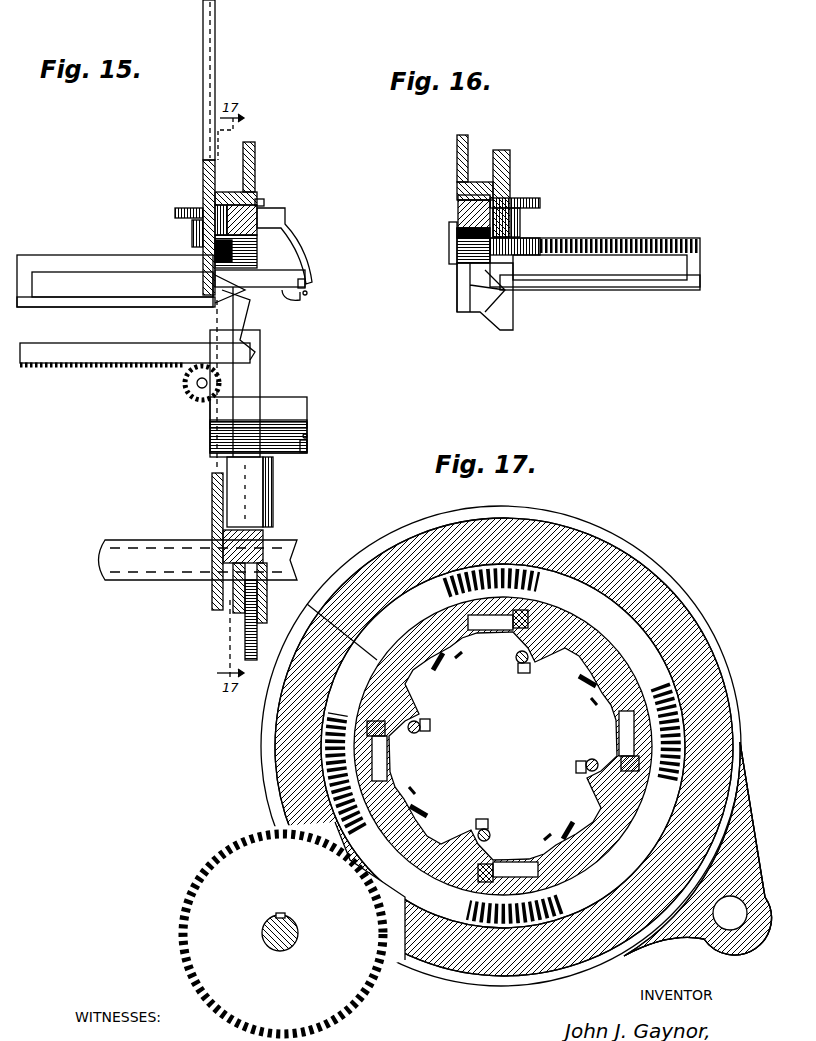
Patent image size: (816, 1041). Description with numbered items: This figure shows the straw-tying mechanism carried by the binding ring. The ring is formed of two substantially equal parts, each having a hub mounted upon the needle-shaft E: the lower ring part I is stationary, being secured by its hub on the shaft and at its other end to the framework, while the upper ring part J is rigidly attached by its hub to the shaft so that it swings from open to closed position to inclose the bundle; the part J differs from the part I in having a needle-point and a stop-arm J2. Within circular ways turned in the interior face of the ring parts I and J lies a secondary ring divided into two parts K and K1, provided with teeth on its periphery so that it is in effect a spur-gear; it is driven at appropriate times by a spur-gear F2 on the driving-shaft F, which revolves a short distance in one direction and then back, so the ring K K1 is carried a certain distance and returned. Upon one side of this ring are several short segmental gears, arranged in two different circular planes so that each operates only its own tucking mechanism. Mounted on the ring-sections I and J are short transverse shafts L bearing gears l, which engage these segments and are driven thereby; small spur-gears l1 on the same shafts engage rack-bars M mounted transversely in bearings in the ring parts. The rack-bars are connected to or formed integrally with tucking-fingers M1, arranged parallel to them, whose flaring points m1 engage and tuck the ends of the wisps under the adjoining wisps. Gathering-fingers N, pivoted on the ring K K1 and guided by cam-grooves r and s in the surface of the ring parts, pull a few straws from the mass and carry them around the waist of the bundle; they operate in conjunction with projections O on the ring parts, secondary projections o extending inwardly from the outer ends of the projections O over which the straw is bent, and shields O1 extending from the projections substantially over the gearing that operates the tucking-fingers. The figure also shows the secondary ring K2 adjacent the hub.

In FIG. 15, the ring part J is at (257, 178).
In FIG. 16, the ring part J is at (457, 168).
In FIG. 17, the ring part J is at (620, 544).
In FIG. 15, the stop-arm J2 is at (215, 70).
In FIG. 15, the cam-groove s is at (255, 155).
In FIG. 16, the cam-groove s is at (457, 150).
In FIG. 15, the cam-groove r is at (264, 203).
In FIG. 16, the cam-groove r is at (458, 197).
In FIG. 15, the secondary ring part K is at (265, 545).
In FIG. 17, the secondary ring part K is at (420, 896).
In FIG. 15, the secondary ring part K1 is at (250, 217).
In FIG. 16, the secondary ring part K1 is at (462, 210).
In FIG. 15, the gear on hub K2 is at (258, 256).
In FIG. 15, the gathering-finger N is at (290, 228).
In FIG. 15, the transverse shaft L is at (192, 228).
In FIG. 16, the transverse shaft L is at (525, 222).
In FIG. 15, the gear l is at (195, 208).
In FIG. 16, the gear l is at (527, 198).
In FIG. 15, the small spur-gear l1 is at (192, 395).
In FIG. 16, the small spur-gear l1 is at (540, 242).
In FIG. 15, the rack-bar M is at (115, 280).
In FIG. 16, the rack-bar M is at (680, 238).
In FIG. 17, the rack-bar M is at (618, 750).
In FIG. 15, the tucking-finger M1 is at (150, 305).
In FIG. 16, the tucking-finger M1 is at (600, 290).
In FIG. 17, the tucking-finger M1 is at (508, 640).
In FIG. 15, the flaring point m1 is at (245, 305).
In FIG. 16, the flaring point m1 is at (487, 312).
In FIG. 17, the flaring point m1 is at (525, 673).
In FIG. 15, the projection O is at (305, 284).
In FIG. 15, the secondary projection o is at (310, 293).
In FIG. 17, the secondary projection o is at (437, 672).
In FIG. 15, the shield O1 is at (296, 292).
In FIG. 17, the shield O1 is at (480, 652).
In FIG. 15, the ring part I is at (212, 600).
In FIG. 17, the ring part I is at (517, 985).
In FIG. 15, the driving-shaft F is at (160, 560).
In FIG. 17, the driving-shaft F is at (298, 936).
In FIG. 15, the spur-gear F2 is at (232, 638).
In FIG. 17, the spur-gear F2 is at (283, 934).
In FIG. 17, the needle-shaft E is at (698, 940).